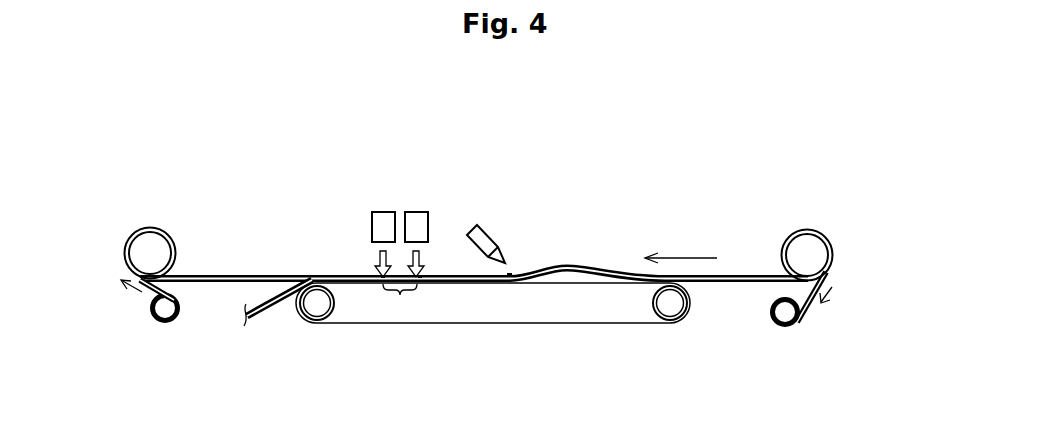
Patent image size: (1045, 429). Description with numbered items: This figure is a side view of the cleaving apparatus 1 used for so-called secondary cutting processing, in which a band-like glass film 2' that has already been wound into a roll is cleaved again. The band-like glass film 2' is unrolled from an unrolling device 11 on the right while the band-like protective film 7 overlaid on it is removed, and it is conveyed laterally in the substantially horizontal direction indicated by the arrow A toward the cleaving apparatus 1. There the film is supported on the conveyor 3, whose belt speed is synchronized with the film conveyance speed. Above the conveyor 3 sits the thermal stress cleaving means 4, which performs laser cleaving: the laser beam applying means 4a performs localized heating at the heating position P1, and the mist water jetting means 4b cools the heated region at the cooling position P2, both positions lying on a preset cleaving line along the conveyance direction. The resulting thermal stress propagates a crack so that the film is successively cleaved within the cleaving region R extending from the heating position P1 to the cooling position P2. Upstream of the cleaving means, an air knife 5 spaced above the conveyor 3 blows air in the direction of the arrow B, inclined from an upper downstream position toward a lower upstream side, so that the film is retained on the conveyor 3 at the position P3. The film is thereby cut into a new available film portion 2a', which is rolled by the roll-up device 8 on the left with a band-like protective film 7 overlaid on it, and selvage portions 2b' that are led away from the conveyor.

The cleaving apparatus 1 is at (614, 178).
The available film portion 2a' is at (474, 251).
The selvage portions 2b' is at (278, 324).
The band-like glass film 2' is at (770, 318).
The conveyor 3 is at (625, 324).
The thermal stress cleaving means 4 is at (362, 134).
The laser beam applying means 4a is at (414, 212).
The mist water jetting means 4b is at (386, 212).
The air knife 5 is at (485, 227).
The band-like protective film 7 is at (153, 298).
The roll-up device 8 is at (151, 225).
The unrolling device 11 is at (811, 227).
The heating position P1 is at (420, 278).
The cooling position P2 is at (383, 278).
The retaining position P3 is at (518, 275).
The air blow direction B is at (510, 270).
The cleaving region R is at (400, 302).
The conveyance direction A is at (681, 247).